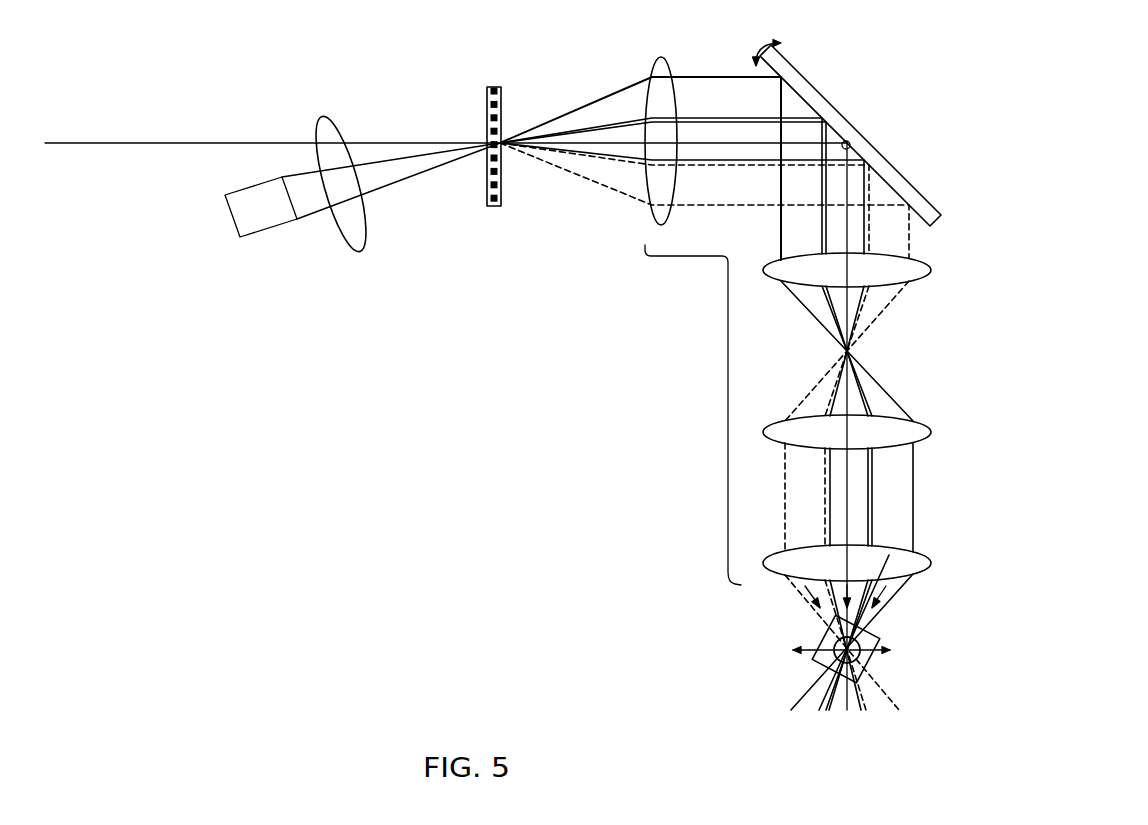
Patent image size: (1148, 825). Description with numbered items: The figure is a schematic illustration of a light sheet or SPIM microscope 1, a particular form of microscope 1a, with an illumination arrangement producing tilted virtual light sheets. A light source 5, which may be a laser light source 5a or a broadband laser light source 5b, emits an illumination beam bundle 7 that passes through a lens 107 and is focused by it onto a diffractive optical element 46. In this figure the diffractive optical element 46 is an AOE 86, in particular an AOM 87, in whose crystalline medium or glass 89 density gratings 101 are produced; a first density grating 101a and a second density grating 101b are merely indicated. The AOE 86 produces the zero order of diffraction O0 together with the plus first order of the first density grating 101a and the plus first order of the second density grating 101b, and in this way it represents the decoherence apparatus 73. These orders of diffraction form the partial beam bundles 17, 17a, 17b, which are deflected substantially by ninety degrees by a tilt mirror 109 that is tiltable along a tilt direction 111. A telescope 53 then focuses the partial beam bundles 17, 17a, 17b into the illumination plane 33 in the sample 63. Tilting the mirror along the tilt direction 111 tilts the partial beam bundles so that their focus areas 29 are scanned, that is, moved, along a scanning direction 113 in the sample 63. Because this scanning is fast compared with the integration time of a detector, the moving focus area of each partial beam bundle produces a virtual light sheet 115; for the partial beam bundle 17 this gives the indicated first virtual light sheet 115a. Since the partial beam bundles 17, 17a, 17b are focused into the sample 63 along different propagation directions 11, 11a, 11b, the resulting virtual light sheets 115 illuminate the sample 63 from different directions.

The SPIM microscope 1 is at (502, 373).
The microscope 1a is at (493, 452).
The light source 5 is at (263, 235).
The laser light source 5a is at (263, 235).
The broadband laser light source 5b is at (270, 230).
The illumination beam bundle 7 is at (317, 200).
The lens 107 is at (357, 222).
The density gratings 101 is at (658, 212).
The first density grating 101a is at (487, 93).
The second density grating 101b is at (658, 206).
The diffractive optical element 46 is at (658, 212).
The decoherence apparatus 73 is at (658, 212).
The AOE 86 is at (658, 212).
The AOM 87 is at (658, 212).
The crystalline medium or glass 89 is at (658, 212).
The partial beam bundle 17 is at (627, 97).
The partial beam bundle 17a is at (585, 135).
The partial beam bundle 17b is at (546, 157).
The zero order of diffraction O0 is at (627, 110).
The tilt mirror 109 is at (893, 180).
The tilt direction 111 is at (756, 48).
The telescope 53 is at (728, 408).
The propagation direction 11 is at (884, 603).
The propagation direction 11a is at (889, 555).
The propagation direction 11b is at (806, 590).
The focus areas 29 is at (772, 648).
The illumination plane 33 is at (823, 620).
The scanning direction 113 is at (817, 635).
The sample 63 is at (822, 663).
The virtual light sheet 115 is at (770, 647).
The first virtual light sheet 115a is at (827, 687).